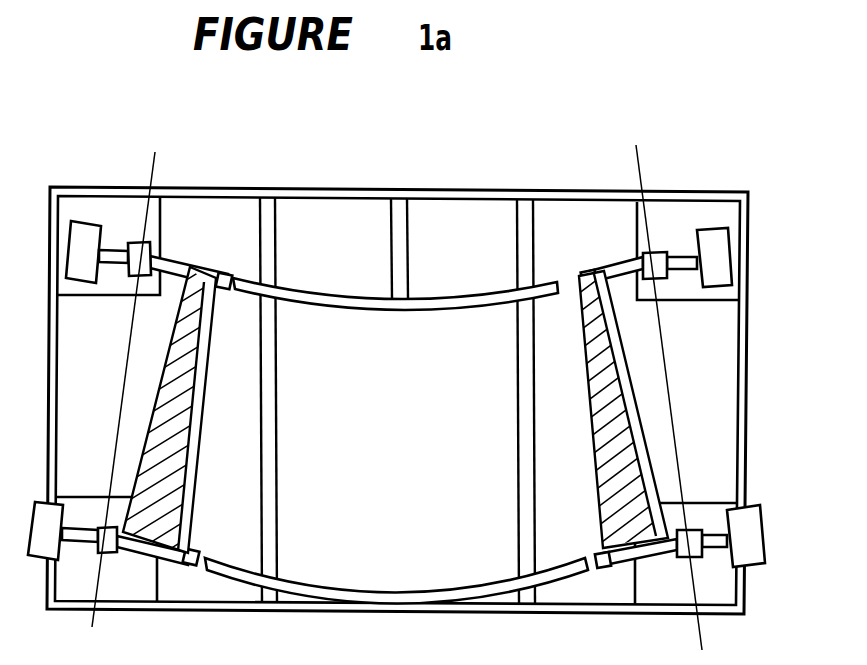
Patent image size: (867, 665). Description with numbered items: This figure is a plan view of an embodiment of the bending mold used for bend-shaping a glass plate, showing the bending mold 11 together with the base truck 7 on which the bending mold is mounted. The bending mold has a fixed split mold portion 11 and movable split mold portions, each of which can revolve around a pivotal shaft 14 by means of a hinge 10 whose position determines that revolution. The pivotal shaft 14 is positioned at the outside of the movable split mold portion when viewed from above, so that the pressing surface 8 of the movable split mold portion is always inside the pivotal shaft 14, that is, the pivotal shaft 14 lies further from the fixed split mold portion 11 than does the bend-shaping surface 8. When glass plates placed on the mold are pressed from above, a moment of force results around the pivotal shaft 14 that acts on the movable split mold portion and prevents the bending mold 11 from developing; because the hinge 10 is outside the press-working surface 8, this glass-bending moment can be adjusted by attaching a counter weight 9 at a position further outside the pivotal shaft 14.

The base truck 7 is at (748, 357).
The pressing surface 8 is at (610, 424).
The counter weight 9 is at (747, 537).
The hinge 10 is at (684, 558).
The bending mold 11 is at (492, 605).
The pivotal shaft 14 is at (648, 227).